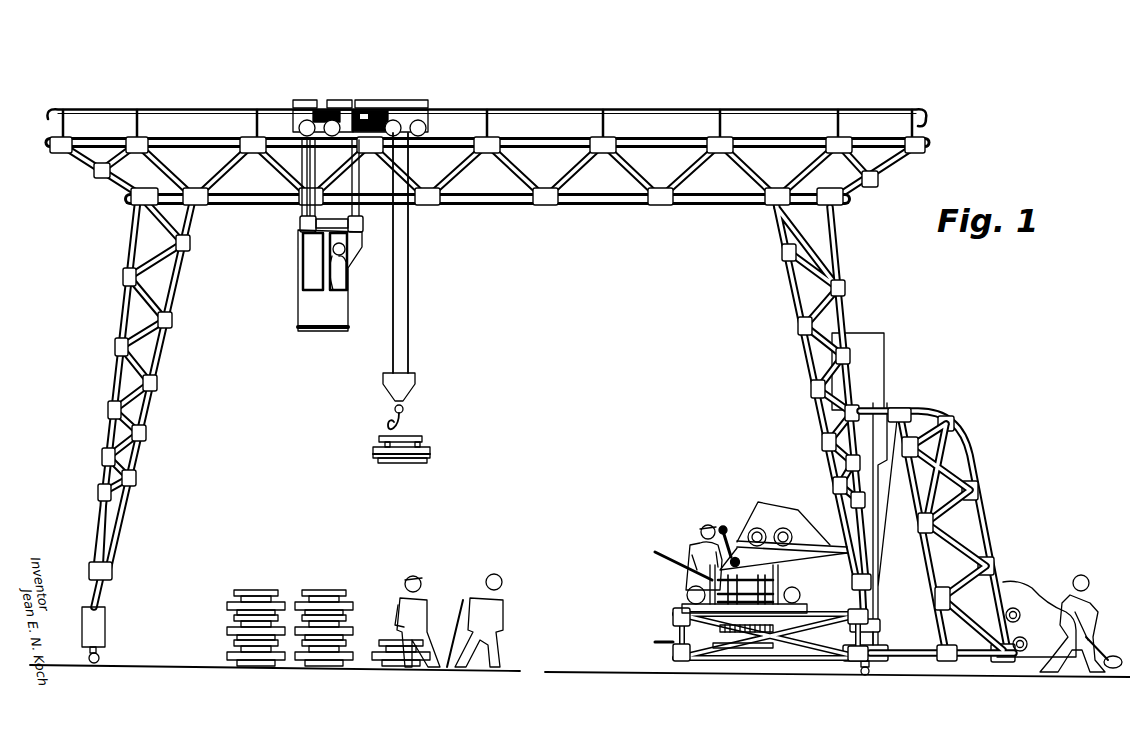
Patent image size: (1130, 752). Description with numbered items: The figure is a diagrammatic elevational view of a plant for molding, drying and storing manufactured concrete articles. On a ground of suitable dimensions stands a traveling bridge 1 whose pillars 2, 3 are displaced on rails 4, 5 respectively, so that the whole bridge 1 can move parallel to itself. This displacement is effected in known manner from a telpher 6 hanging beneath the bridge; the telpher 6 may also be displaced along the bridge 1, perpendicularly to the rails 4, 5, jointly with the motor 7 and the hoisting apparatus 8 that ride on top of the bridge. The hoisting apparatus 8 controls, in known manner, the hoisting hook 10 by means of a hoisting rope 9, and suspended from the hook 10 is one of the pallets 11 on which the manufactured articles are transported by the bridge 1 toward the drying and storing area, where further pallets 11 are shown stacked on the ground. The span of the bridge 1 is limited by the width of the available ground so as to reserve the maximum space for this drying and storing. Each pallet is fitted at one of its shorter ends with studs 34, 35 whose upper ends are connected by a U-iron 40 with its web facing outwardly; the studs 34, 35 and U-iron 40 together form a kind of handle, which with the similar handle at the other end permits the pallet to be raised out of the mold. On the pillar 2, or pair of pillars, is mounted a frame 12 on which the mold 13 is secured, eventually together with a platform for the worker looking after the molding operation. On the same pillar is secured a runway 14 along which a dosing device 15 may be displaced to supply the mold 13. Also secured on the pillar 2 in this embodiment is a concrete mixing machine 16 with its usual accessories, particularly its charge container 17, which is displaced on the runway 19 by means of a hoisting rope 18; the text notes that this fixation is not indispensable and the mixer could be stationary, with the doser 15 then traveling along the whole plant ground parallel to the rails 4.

The traveling bridge 1 is at (617, 205).
The pillar 2 is at (845, 287).
The pillar 3 is at (120, 327).
The rail 4 is at (874, 668).
The rail 5 is at (86, 653).
The telpher 6 is at (313, 323).
The motor 7 is at (330, 99).
The hoisting apparatus 8 is at (397, 101).
The hoisting rope 9 is at (407, 299).
The hook 10 is at (408, 417).
The pallets 11 is at (415, 464).
The frame 12 is at (671, 648).
The mold 13 is at (780, 585).
The runway 14 is at (826, 548).
The dosing device 15 is at (785, 502).
The concrete mixing machine 16 is at (873, 370).
The charge container 17 is at (1028, 593).
The hoisting rope 18 is at (945, 445).
The runway 19 is at (980, 503).
The stud 34 is at (375, 446).
The stud 35 is at (431, 441).
The U-iron 40 is at (383, 437).